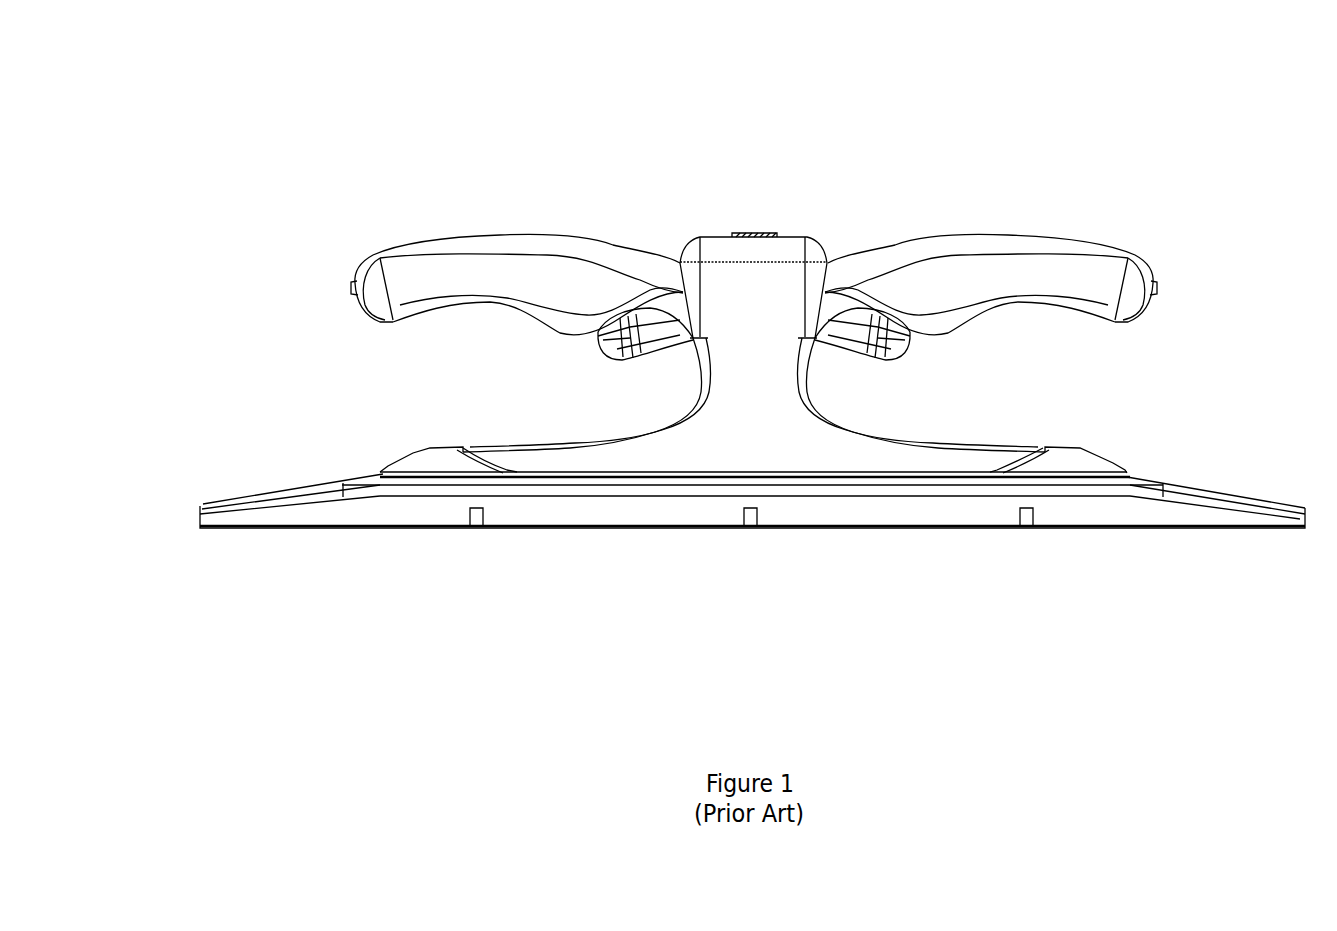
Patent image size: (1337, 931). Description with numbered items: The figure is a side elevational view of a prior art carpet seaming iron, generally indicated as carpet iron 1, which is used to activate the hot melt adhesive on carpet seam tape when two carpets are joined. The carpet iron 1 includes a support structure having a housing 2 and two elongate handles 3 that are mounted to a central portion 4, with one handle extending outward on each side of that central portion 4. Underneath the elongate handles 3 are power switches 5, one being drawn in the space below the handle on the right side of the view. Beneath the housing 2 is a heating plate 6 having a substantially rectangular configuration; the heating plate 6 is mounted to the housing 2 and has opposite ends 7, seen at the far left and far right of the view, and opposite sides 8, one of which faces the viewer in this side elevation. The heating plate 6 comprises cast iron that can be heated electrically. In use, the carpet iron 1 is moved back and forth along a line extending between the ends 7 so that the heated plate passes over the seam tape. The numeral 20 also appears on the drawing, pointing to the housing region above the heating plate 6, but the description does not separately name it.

The carpet iron 1 is at (1016, 160).
The housing 2 is at (505, 443).
The elongate handles 3 is at (500, 239).
The central portion 4 is at (810, 390).
The power switches 5 is at (891, 337).
The heating plate 6 is at (345, 528).
The opposite ends 7 is at (213, 503).
The opposite sides 8 is at (665, 528).
The cover shroud 20 is at (973, 445).